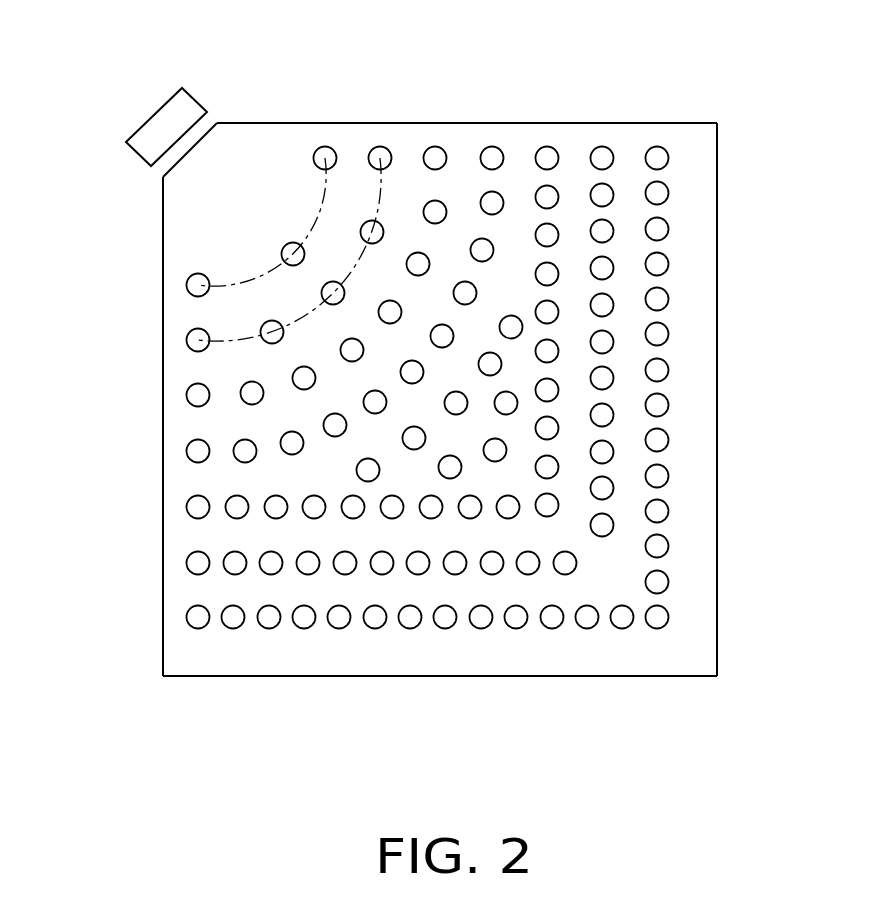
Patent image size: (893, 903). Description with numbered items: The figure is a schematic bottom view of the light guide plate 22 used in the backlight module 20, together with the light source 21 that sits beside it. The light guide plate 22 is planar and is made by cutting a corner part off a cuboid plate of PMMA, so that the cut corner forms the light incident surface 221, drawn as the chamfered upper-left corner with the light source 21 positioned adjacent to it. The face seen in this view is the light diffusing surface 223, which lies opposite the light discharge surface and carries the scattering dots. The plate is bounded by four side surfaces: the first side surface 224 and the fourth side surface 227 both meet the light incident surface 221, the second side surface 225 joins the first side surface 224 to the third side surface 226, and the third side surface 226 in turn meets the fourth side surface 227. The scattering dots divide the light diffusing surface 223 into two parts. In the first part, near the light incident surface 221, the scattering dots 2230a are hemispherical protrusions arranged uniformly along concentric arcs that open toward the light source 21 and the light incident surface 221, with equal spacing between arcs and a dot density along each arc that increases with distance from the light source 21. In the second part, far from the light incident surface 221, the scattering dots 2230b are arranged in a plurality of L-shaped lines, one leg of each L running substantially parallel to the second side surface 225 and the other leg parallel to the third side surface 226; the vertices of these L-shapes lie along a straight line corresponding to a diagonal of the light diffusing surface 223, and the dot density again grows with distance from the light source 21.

The backlight module 20 is at (415, 82).
The light source 21 is at (160, 124).
The light guide plate 22 is at (735, 155).
The light incident surface 221 is at (167, 168).
The light diffusing surface 223 is at (697, 275).
The first side surface 224 is at (162, 487).
The second side surface 225 is at (500, 678).
The third side surface 226 is at (716, 458).
The fourth side surface 227 is at (580, 123).
The scattering dots 2230a is at (323, 157).
The scattering dots 2230b is at (197, 617).